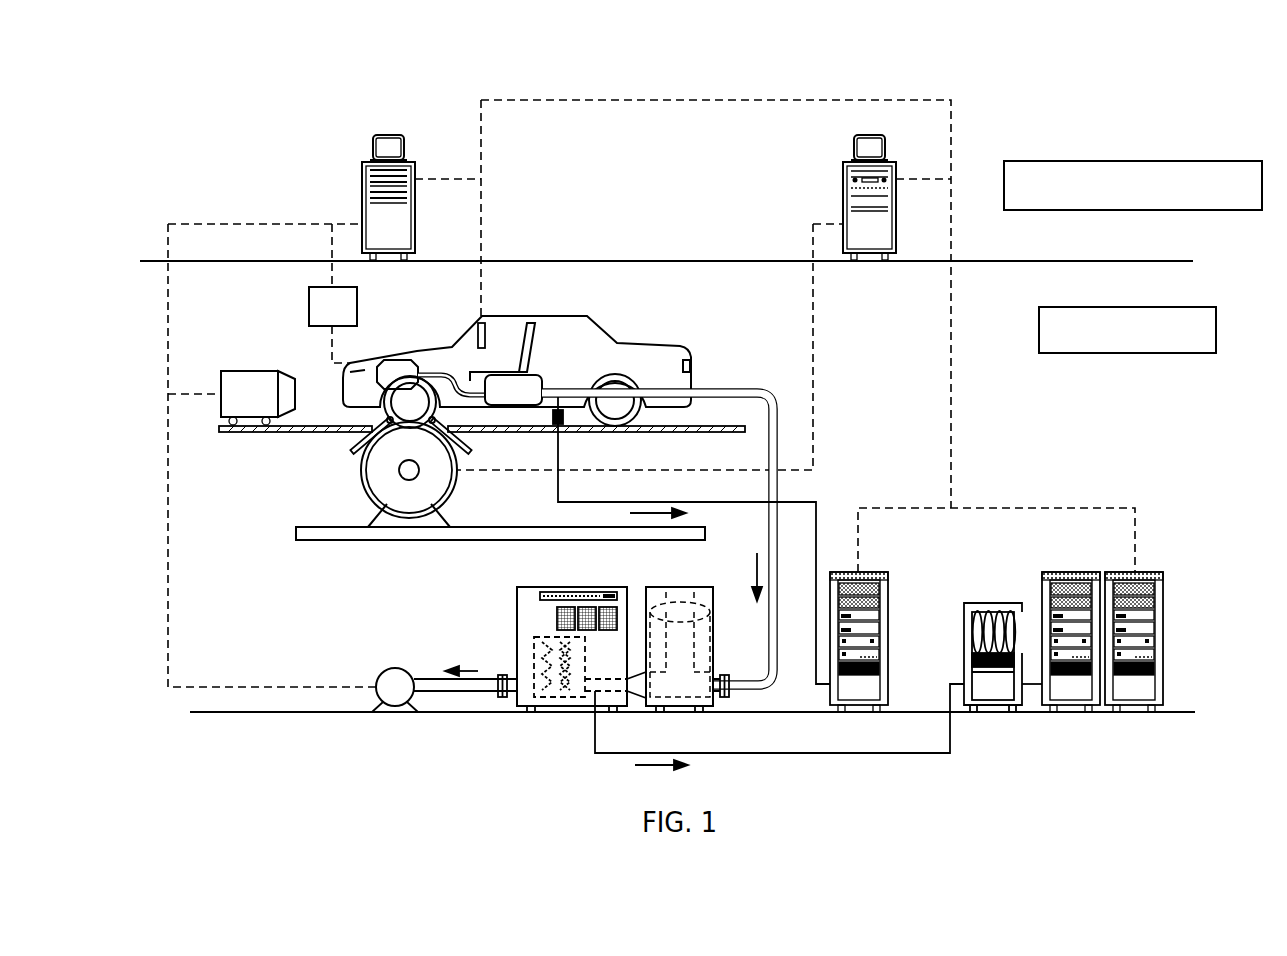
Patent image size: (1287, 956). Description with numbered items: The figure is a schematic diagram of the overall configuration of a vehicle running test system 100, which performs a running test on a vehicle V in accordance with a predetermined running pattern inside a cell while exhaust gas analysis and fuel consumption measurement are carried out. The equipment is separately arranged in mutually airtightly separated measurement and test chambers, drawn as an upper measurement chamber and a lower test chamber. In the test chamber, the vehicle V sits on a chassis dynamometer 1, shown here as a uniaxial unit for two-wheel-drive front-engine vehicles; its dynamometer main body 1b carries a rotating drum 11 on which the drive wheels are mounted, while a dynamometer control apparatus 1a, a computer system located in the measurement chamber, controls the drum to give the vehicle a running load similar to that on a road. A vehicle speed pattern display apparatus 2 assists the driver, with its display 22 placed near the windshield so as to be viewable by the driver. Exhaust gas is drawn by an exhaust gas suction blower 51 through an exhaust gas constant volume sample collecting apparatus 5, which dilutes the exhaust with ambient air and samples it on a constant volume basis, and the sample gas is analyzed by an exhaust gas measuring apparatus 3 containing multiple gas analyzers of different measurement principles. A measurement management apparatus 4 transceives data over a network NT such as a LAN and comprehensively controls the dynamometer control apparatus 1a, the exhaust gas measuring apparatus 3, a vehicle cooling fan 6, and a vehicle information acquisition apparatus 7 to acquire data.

The vehicle running test system 100 is at (1016, 98).
The chassis dynamometer 1 is at (482, 478).
The dynamometer control apparatus 1a is at (843, 176).
The dynamometer main body 1b is at (367, 486).
The rotating drum 11 is at (452, 488).
The vehicle speed pattern display apparatus 2 is at (468, 332).
The display 22 is at (486, 327).
The exhaust gas measuring apparatus 3 is at (945, 530).
The measurement management apparatus 4 is at (362, 196).
The exhaust gas constant volume sample collecting apparatus 5 is at (492, 605).
The exhaust gas suction blower 51 is at (385, 670).
The vehicle cooling fan 6 is at (228, 368).
The vehicle information acquisition apparatus 7 is at (309, 303).
The vehicle V is at (645, 343).
The network NT is at (651, 393).